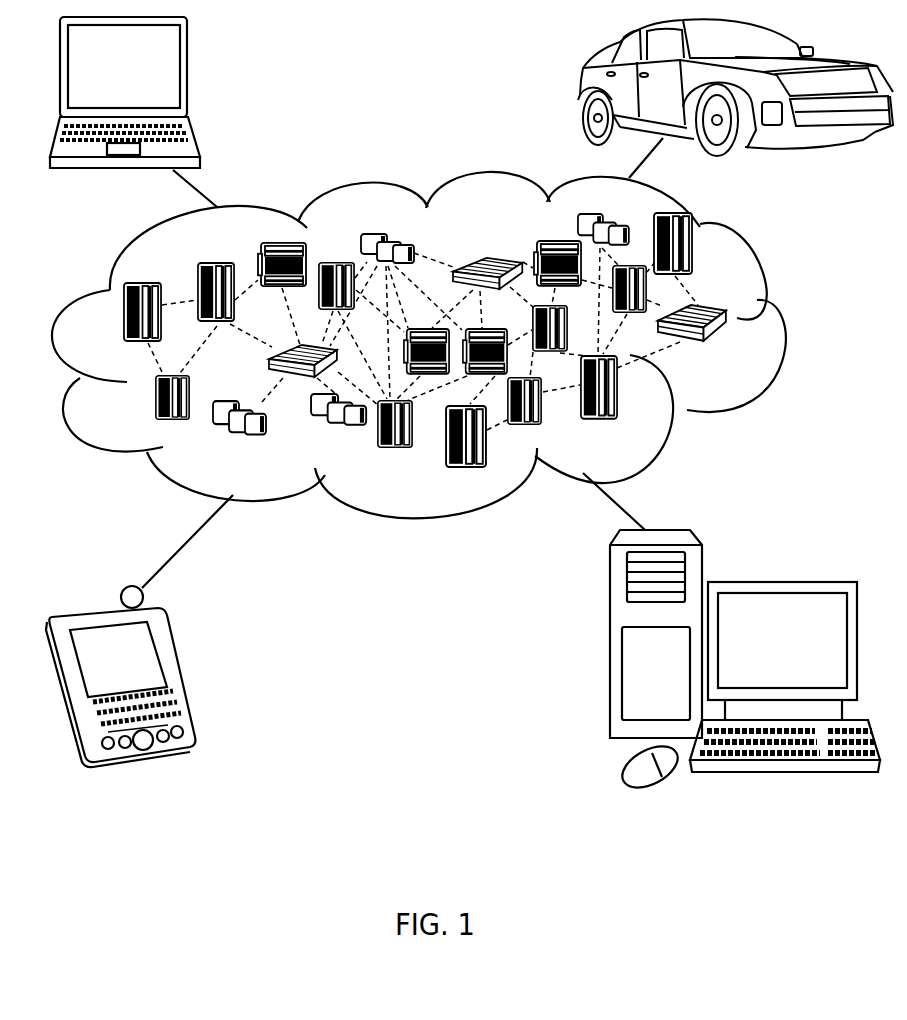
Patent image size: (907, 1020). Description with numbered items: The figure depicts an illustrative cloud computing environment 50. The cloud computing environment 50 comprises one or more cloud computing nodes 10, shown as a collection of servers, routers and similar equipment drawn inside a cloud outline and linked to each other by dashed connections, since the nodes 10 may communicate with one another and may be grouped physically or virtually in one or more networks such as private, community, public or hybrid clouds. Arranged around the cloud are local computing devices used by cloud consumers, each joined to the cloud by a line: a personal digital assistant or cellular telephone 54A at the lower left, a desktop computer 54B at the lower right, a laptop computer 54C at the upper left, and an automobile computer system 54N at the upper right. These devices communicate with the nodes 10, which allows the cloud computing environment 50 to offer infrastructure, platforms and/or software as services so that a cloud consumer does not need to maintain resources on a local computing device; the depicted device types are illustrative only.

The cloud computing nodes 10 is at (444, 345).
The cloud computing environment 50 is at (782, 324).
The personal digital assistant (PDA) or cellular telephone 54A is at (176, 669).
The desktop computer 54B is at (782, 583).
The laptop computer 54C is at (188, 72).
The automobile computer system 54N is at (583, 92).